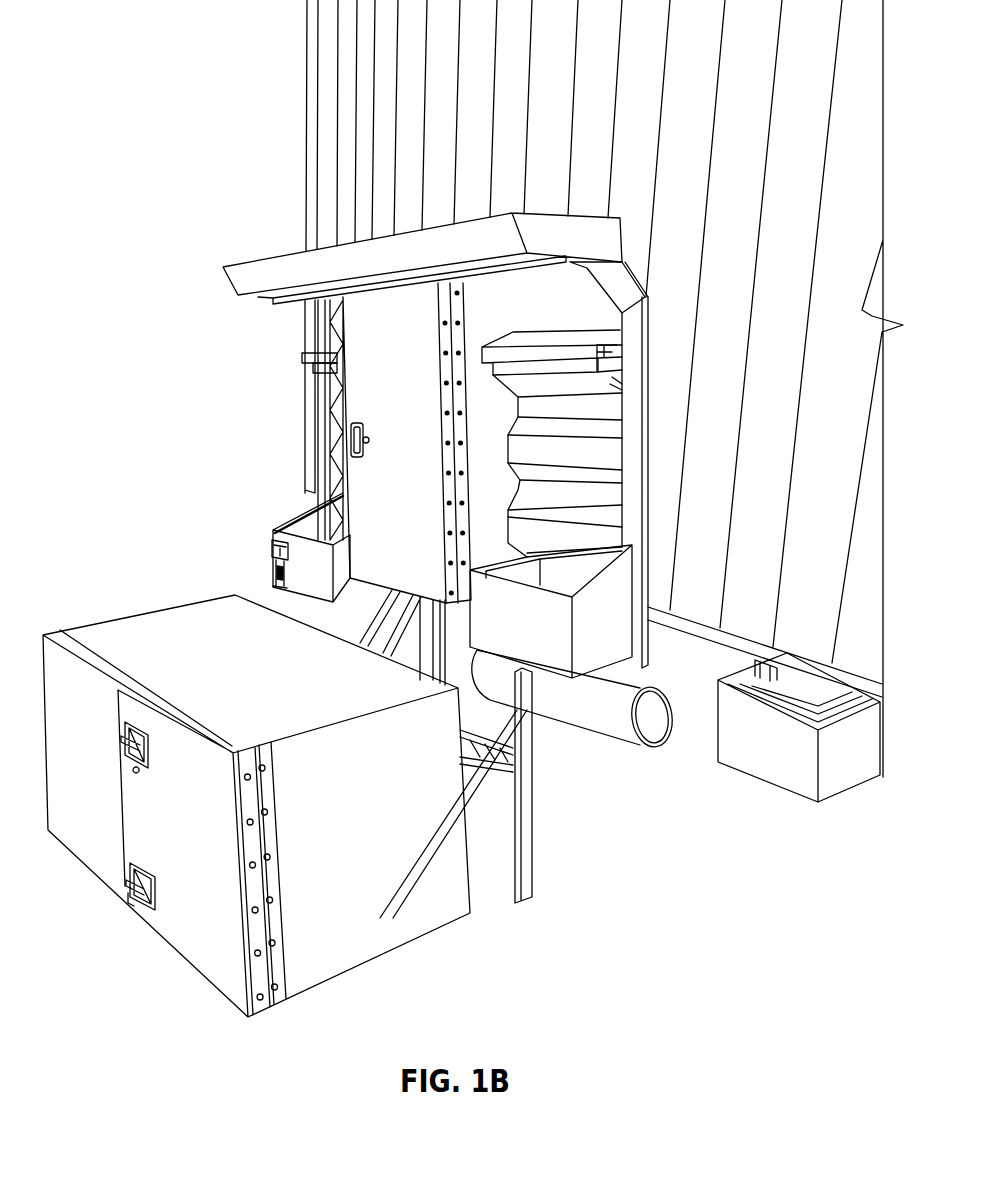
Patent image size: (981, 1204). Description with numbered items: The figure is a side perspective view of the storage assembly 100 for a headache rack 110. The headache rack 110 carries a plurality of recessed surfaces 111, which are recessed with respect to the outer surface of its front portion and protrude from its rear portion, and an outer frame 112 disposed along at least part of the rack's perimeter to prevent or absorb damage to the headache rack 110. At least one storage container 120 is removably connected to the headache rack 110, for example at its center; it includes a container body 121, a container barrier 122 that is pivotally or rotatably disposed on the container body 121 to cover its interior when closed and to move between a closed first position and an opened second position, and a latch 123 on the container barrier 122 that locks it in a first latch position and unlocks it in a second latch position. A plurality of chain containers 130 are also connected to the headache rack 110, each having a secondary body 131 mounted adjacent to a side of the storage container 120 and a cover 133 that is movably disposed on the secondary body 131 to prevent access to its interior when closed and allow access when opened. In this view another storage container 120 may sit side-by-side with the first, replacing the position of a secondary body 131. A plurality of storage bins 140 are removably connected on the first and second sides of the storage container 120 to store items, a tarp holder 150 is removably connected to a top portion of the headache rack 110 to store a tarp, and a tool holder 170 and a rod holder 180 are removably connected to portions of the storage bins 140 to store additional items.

The storage assembly 100 is at (586, 110).
The headache rack 110 is at (597, 458).
The recessed surfaces 111 is at (603, 407).
The outer frame 112 is at (636, 293).
The storage container 120 is at (330, 474).
The container body 121 is at (487, 528).
The container barrier 122 is at (363, 396).
The latch 123 is at (355, 438).
The chain containers 130 is at (294, 368).
The secondary body 131 is at (600, 366).
The cover 133 is at (620, 343).
The storage bins 140 is at (560, 618).
The tarp holder 150 is at (402, 247).
The tool holder 170 is at (270, 558).
The rod holder 180 is at (603, 722).